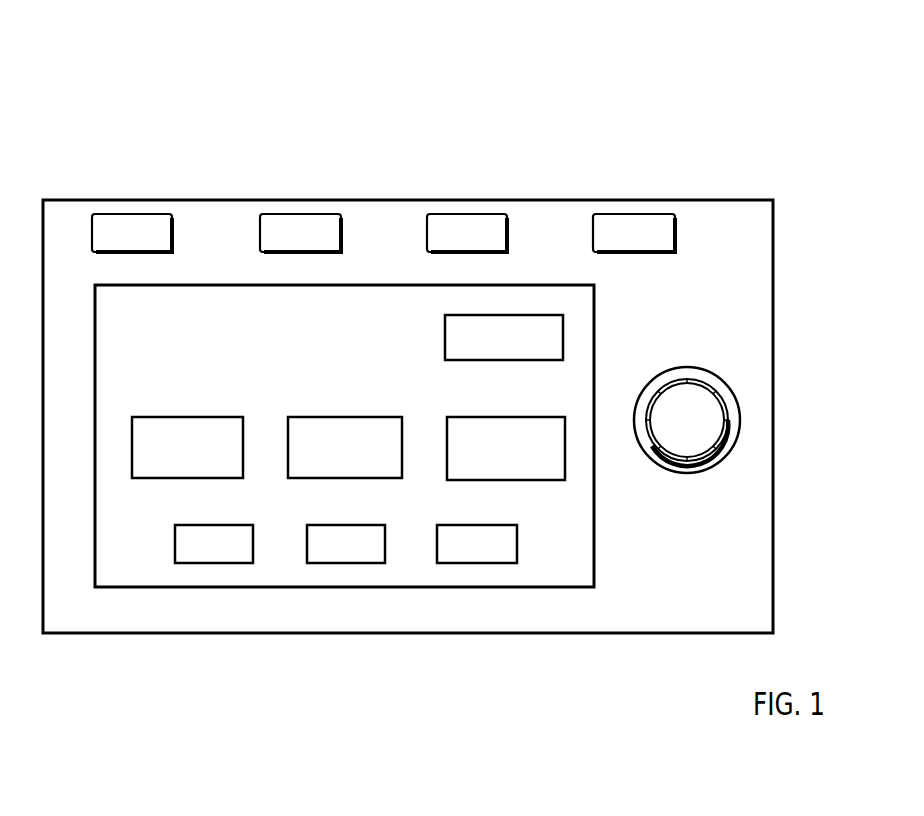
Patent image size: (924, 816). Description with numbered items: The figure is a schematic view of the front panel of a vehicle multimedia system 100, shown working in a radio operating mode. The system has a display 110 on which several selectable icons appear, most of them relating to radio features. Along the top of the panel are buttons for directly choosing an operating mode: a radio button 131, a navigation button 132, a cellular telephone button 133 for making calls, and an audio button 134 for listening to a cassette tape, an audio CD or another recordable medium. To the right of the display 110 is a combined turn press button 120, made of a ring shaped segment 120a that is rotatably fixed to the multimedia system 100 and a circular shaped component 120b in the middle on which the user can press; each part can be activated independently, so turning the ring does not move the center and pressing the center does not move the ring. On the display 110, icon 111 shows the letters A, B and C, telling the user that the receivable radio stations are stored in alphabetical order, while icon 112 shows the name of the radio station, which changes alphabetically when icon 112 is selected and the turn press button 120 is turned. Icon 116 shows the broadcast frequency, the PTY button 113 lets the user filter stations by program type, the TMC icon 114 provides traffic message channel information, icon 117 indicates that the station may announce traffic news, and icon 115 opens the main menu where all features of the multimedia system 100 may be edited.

The vehicle multimedia system 100 is at (482, 345).
The display 110 is at (300, 587).
The icon 111 is at (228, 423).
The icon 112 is at (387, 425).
The PTY button 113 is at (240, 530).
The TMC icon 114 is at (372, 530).
The icon 115 is at (453, 334).
The icon 116 is at (545, 425).
The icon 117 is at (503, 530).
The combined turn press button 120 is at (743, 420).
The ring shaped segment 120a is at (702, 377).
The circular shaped component 120b is at (692, 447).
The radio button 131 is at (158, 218).
The navigation button 132 is at (325, 218).
The cellular telephone button 133 is at (491, 218).
The audio button 134 is at (659, 218).